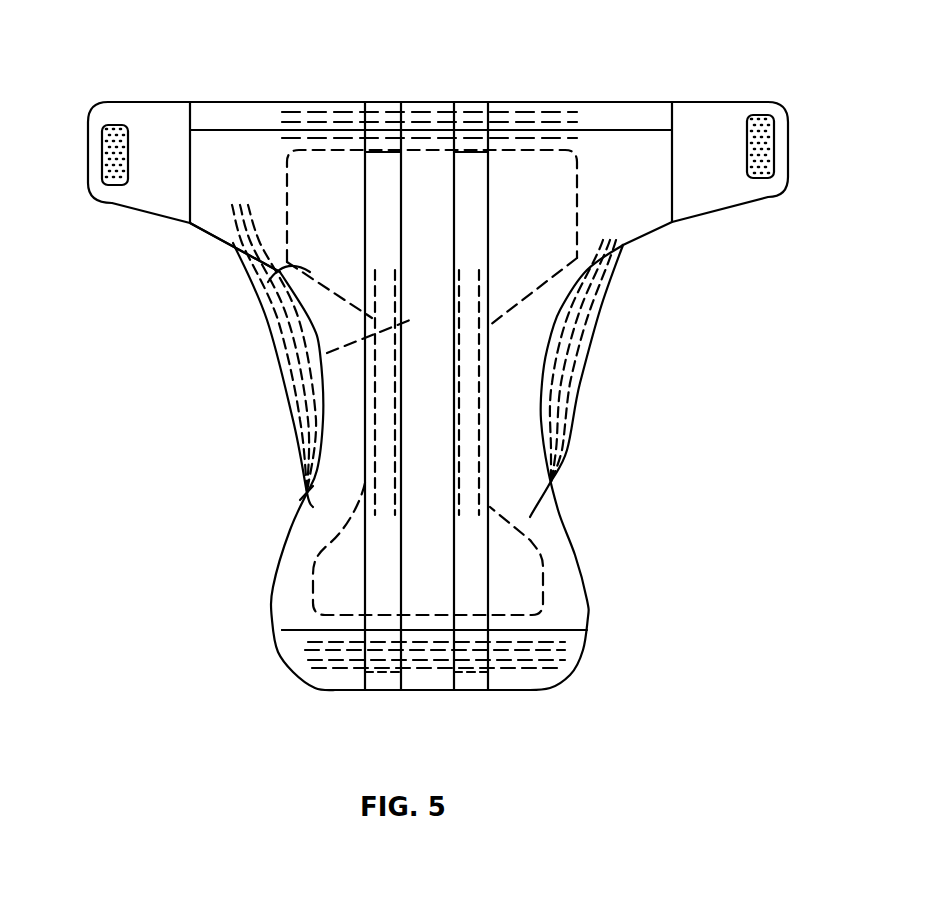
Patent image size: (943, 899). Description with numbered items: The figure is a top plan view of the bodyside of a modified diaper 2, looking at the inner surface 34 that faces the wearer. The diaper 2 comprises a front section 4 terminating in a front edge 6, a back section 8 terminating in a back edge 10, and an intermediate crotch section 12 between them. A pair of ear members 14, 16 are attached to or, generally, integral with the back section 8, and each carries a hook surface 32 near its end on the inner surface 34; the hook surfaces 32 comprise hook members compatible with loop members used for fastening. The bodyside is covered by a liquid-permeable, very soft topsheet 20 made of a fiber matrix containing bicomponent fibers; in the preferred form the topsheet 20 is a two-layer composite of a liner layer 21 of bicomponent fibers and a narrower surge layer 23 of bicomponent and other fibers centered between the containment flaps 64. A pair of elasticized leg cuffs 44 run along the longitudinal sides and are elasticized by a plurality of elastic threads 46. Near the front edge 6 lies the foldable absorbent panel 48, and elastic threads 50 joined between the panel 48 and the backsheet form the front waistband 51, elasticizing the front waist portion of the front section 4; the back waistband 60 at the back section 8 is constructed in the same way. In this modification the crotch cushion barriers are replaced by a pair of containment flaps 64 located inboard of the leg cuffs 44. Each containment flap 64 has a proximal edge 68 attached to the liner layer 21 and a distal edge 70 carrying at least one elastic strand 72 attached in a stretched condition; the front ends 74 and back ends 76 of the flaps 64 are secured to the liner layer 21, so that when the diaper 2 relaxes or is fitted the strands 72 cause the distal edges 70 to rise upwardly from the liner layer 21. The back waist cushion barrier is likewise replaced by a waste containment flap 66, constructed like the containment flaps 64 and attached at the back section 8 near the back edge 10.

The diaper 2 is at (705, 437).
The front section 4 is at (190, 648).
The front edge 6 is at (500, 693).
The back section 8 is at (100, 272).
The back edge 10 is at (645, 102).
The crotch section 12 is at (170, 485).
The ear member 14 is at (718, 108).
The ear member 16 is at (168, 112).
The topsheet 20 is at (220, 227).
The liner layer 21 is at (280, 270).
The surge layer 23 is at (327, 353).
The hook surface 32 is at (112, 123).
The inner surface 34 is at (307, 493).
The leg cuff 44 is at (297, 413).
The elastic threads 46 is at (268, 215).
The foldable absorbent panel 48 is at (610, 665).
The elastic threads 50 is at (348, 672).
The front waistband 51 is at (250, 683).
The back waistband 60 is at (332, 102).
The containment flap 64 is at (476, 488).
The waste containment flap 66 is at (603, 112).
The proximal edge 68 is at (370, 190).
The distal edge 70 is at (404, 232).
The elastic strand 72 is at (395, 295).
The front end 74 is at (470, 683).
The back end 76 is at (457, 103).